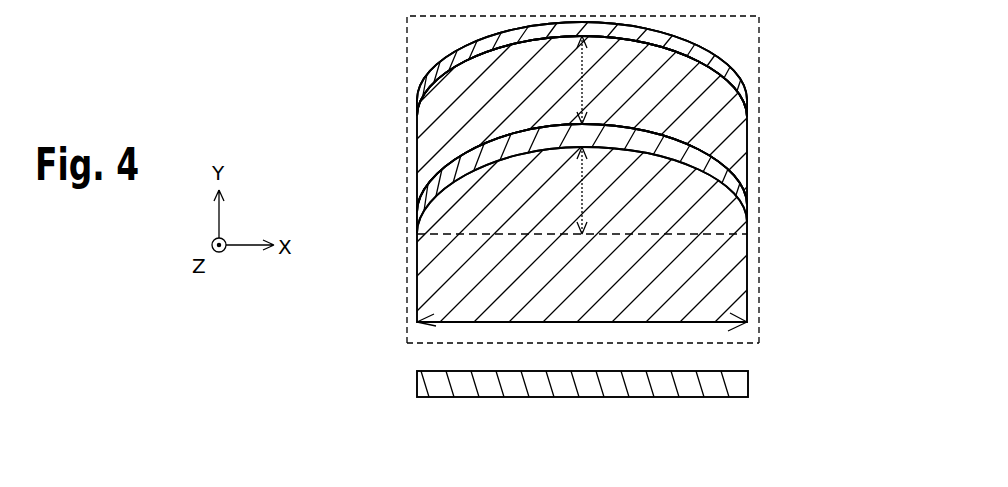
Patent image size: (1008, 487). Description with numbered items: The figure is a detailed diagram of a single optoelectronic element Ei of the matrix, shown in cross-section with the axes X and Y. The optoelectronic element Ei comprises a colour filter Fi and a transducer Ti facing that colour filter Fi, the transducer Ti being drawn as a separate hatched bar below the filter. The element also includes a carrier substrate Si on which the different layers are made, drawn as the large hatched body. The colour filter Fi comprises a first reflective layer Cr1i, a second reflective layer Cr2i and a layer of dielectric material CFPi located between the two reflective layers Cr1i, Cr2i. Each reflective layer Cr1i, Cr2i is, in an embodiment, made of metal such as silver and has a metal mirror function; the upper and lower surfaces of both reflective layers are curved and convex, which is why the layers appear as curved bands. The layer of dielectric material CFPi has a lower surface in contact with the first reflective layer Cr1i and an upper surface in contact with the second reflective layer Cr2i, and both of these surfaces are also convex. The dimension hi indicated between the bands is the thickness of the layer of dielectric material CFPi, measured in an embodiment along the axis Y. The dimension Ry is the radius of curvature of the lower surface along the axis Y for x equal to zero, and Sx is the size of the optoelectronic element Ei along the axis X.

The optoelectronic element Ei is at (360, 33).
The colour filter Fi is at (759, 322).
The carrier substrate Si is at (728, 283).
The second reflective layer Cr2i is at (446, 70).
The first reflective layer Cr1i is at (453, 165).
The layer of dielectric material CFPi is at (458, 118).
The thickness of the layer of dielectric material hi is at (571, 80).
The radius of curvature of the lower surface Ry is at (582, 190).
The size of the optoelectronic element along the axis X Sx is at (492, 322).
The transducer Ti is at (557, 385).